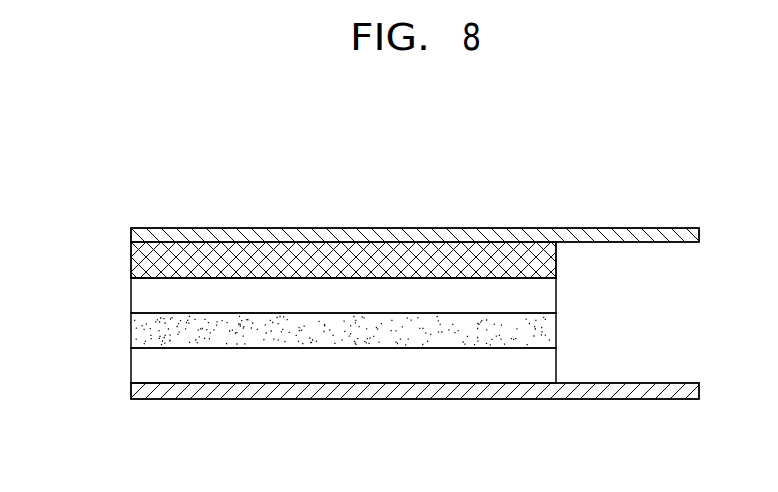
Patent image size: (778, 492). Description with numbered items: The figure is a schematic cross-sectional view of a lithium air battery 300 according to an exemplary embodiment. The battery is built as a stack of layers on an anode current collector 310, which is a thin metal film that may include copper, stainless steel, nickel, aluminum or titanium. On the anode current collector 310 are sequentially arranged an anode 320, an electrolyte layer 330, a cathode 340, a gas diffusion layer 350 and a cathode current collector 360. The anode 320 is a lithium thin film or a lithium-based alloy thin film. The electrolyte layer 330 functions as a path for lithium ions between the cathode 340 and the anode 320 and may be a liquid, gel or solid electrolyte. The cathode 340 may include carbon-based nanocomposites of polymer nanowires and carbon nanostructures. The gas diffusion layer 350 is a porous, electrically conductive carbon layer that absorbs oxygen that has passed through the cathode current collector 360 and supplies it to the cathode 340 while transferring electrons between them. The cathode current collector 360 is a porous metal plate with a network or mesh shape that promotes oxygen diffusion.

The lithium air battery 300 is at (598, 178).
The anode current collector 310 is at (345, 399).
The anode 320 is at (131, 364).
The electrolyte layer 330 is at (131, 328).
The cathode 340 is at (131, 292).
The gas diffusion layer 350 is at (131, 258).
The cathode current collector 360 is at (348, 228).